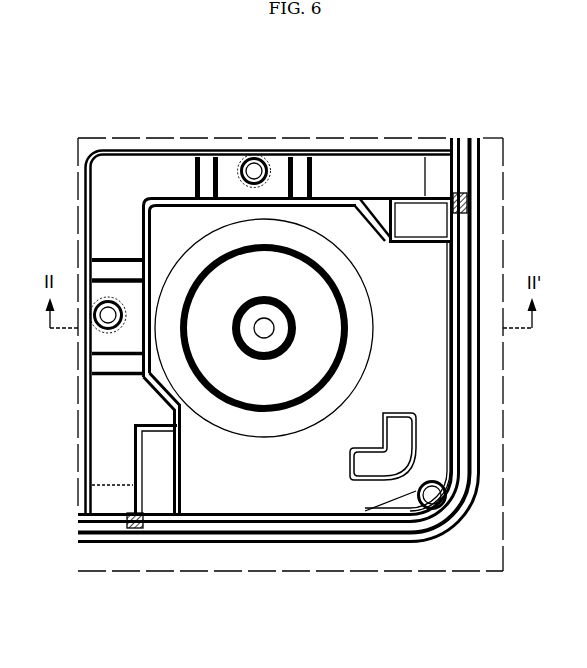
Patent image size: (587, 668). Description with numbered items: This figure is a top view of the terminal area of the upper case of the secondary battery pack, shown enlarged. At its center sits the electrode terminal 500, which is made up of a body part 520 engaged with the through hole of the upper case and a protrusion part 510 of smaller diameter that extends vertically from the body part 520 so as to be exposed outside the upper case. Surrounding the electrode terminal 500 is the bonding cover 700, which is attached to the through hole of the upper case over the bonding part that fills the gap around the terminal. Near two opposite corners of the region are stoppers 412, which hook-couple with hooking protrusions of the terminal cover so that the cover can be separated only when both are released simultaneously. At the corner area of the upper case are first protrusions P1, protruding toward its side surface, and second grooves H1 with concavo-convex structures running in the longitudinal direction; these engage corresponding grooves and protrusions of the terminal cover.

The electrode terminal 500 is at (277, 101).
The protrusion part 510 is at (277, 316).
The body part 520 is at (312, 283).
The bonding cover 700 is at (357, 342).
The stopper 412 is at (427, 207).
The first protrusion P1 is at (466, 195).
The second groove H1 is at (107, 270).